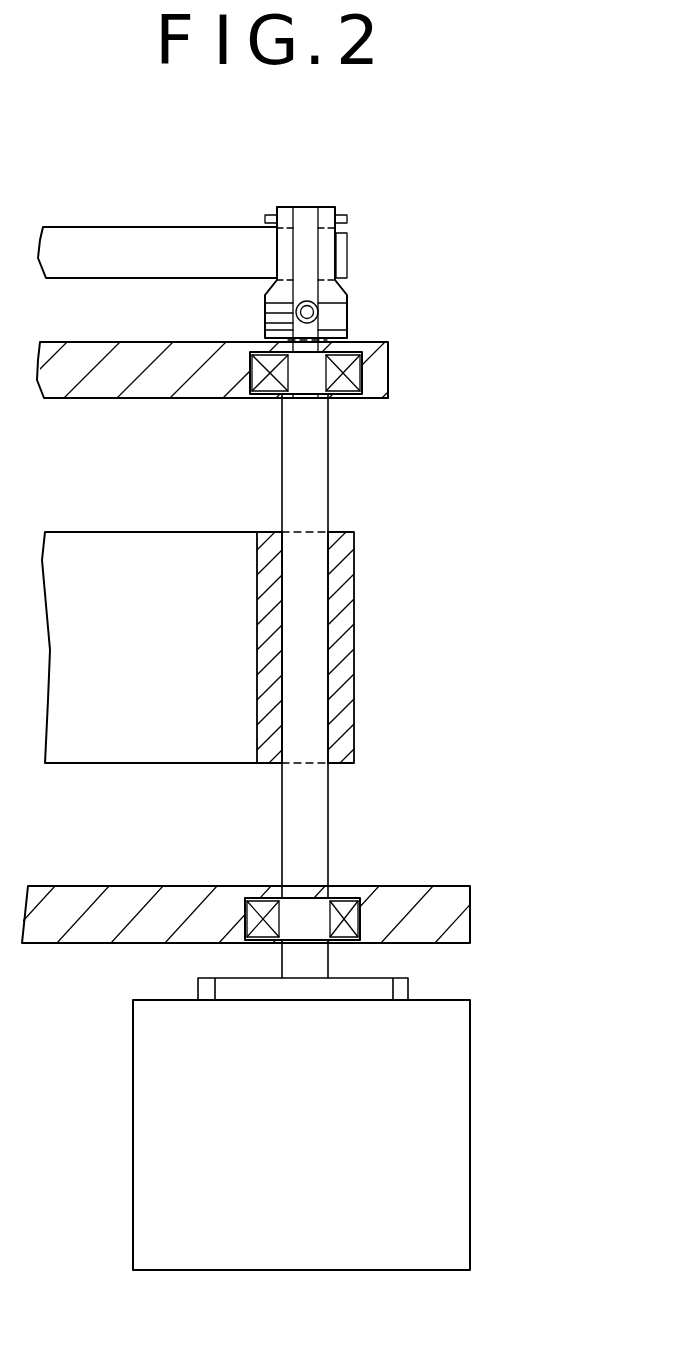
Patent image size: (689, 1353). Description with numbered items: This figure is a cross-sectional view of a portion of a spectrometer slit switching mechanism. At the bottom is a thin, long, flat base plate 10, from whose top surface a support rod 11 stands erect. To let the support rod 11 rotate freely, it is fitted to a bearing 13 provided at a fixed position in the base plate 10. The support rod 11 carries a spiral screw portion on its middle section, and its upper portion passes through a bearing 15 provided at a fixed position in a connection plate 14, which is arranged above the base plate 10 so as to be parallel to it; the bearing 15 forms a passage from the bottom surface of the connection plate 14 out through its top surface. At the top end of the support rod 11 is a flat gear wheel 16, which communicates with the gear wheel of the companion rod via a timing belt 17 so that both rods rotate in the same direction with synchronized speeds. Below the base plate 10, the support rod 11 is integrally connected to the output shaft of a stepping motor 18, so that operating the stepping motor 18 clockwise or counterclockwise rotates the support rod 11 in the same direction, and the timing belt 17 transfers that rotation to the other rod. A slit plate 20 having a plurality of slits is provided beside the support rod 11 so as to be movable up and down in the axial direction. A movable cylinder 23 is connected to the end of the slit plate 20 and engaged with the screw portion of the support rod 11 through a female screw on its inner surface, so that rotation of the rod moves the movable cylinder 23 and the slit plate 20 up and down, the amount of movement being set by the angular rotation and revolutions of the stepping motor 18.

The base plate 10 is at (457, 919).
The support rod 11 is at (320, 510).
The bearing 13 is at (352, 917).
The connection plate 14 is at (380, 388).
The bearing 15 is at (357, 372).
The flat gear wheel 16 is at (338, 305).
The timing belt 17 is at (167, 238).
The stepping motor 18 is at (453, 1158).
The slit plate 20 is at (193, 575).
The movable cylinder 23 is at (345, 641).